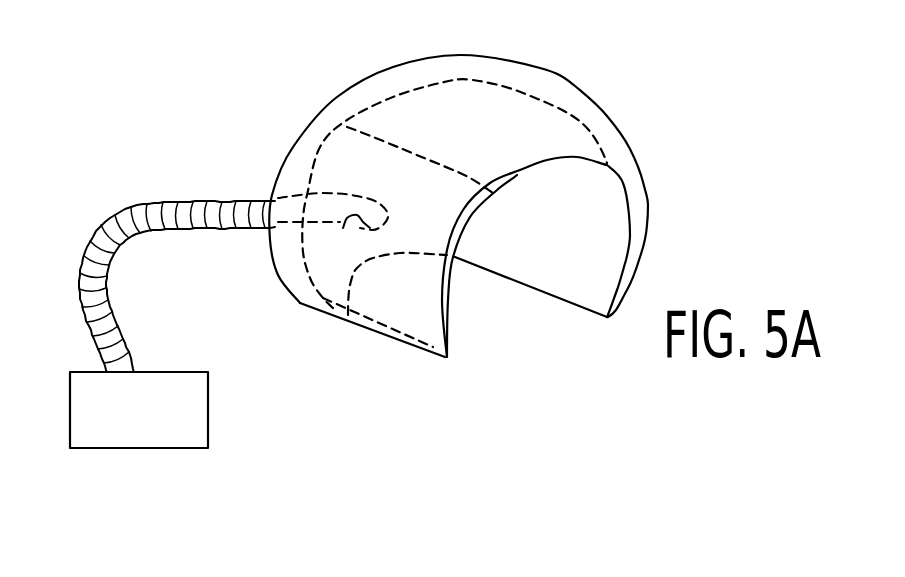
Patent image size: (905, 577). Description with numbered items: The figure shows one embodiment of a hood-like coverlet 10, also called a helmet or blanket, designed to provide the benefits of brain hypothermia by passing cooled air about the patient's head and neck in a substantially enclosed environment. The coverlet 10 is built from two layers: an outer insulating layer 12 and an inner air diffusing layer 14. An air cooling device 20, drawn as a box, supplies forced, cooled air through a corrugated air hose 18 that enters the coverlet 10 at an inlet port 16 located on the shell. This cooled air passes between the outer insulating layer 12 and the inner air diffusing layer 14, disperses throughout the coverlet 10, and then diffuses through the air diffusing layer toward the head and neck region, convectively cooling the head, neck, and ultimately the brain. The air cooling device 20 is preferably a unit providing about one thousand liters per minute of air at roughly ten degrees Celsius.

The coverlet 10 is at (387, 237).
The outer insulating layer 12 is at (338, 97).
The inner air diffusing layer 14 is at (605, 212).
The inlet port 16 is at (343, 228).
The air hose 18 is at (140, 201).
The air cooling device 20 is at (209, 392).